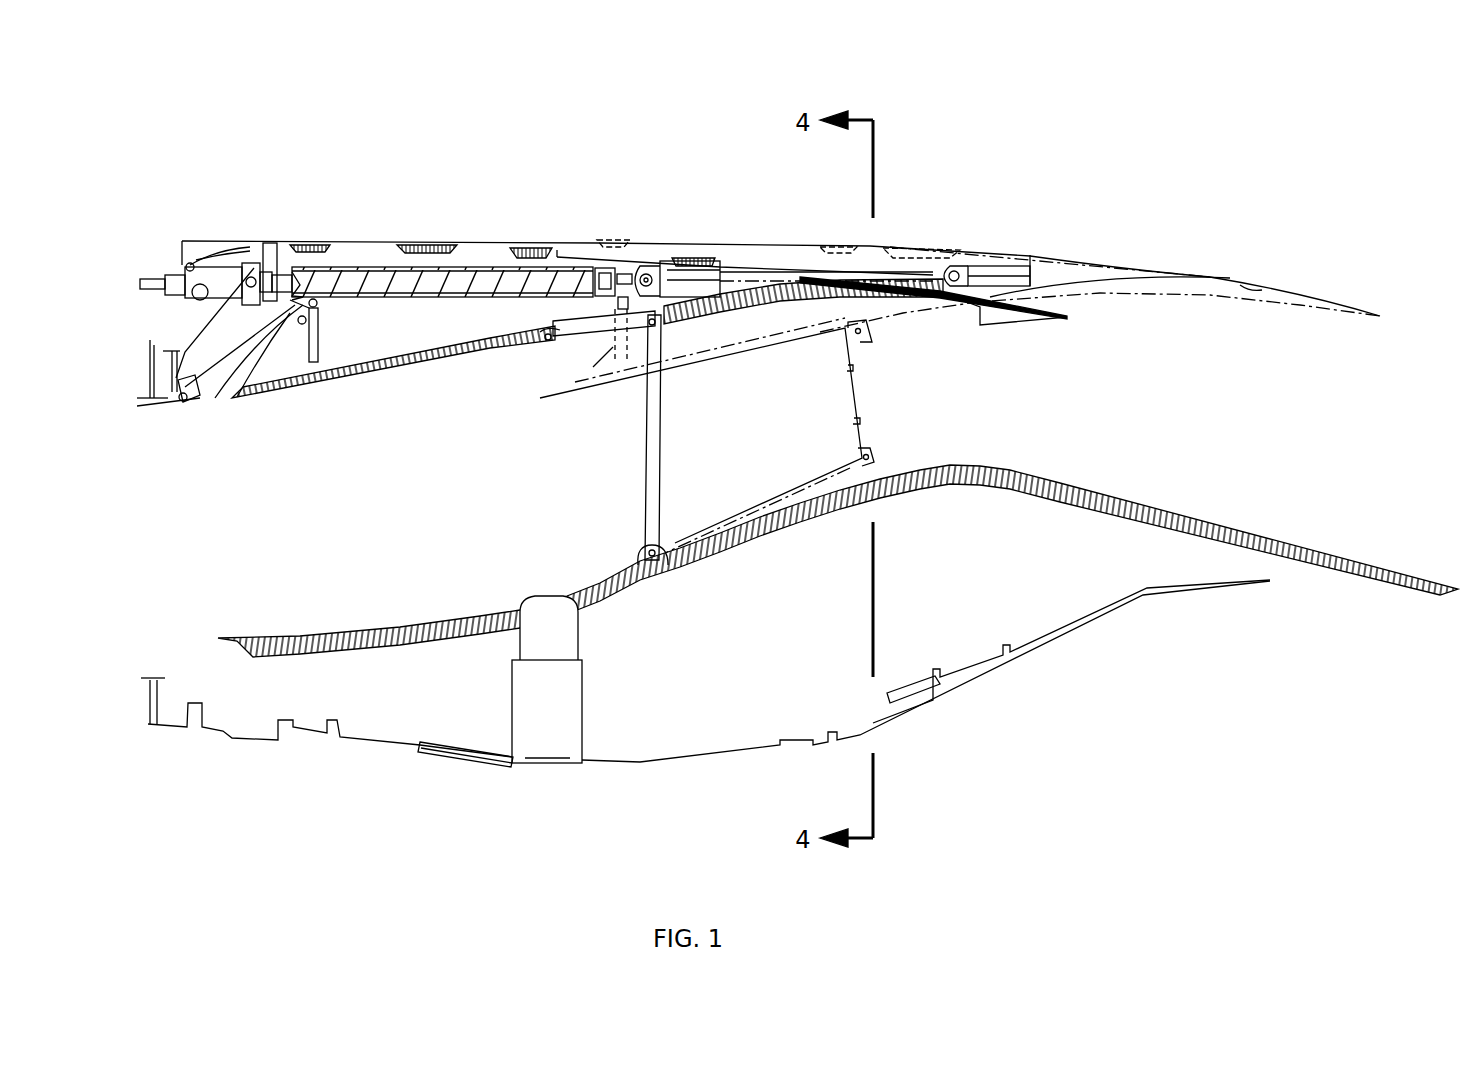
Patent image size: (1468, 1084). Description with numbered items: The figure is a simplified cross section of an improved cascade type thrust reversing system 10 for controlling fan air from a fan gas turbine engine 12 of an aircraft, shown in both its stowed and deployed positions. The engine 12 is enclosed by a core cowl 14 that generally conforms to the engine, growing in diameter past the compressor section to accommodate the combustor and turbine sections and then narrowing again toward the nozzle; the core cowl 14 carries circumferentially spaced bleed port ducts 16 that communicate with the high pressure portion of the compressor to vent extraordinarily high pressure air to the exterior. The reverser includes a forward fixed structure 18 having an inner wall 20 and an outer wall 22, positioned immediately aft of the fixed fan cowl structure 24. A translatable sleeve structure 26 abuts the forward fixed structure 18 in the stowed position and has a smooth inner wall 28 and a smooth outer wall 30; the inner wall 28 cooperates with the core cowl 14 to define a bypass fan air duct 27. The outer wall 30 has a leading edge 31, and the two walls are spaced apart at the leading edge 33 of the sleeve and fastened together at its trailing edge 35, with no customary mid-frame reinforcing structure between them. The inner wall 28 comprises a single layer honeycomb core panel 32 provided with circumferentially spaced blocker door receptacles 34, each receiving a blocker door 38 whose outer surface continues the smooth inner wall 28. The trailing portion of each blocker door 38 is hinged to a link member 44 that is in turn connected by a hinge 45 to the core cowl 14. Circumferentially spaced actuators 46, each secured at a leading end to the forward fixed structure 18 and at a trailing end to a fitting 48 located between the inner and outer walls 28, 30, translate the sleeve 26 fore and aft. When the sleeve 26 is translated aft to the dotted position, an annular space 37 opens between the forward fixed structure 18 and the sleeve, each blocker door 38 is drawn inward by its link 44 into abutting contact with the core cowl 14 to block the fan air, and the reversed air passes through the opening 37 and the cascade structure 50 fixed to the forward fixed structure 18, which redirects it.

The cascade type thrust reversing system 10 is at (933, 232).
The fan gas turbine engine 12 is at (697, 757).
The core cowl 14 is at (1033, 473).
The bleed port ducts 16 is at (563, 597).
The forward fixed structure 18 is at (202, 238).
The inner wall 20 is at (213, 393).
The outer wall 22 is at (253, 240).
The fixed fan cowl structure 24 is at (160, 407).
The translatable sleeve structure 26 is at (490, 243).
The bypass fan air duct 27 is at (498, 438).
The smooth inner wall 28 is at (390, 380).
The smooth outer wall 30 is at (382, 242).
The leading edge 31 is at (580, 238).
The single layer honeycomb core panel 32 is at (417, 352).
The leading edge 33 is at (543, 393).
The blocker door receptacles 34 is at (567, 327).
The trailing edge 35 is at (1232, 280).
The annular space 37 is at (541, 369).
The blocker door 38 is at (855, 397).
The link member 44 is at (663, 433).
The hinge 45 is at (650, 552).
The actuators 46 is at (277, 270).
The fitting 48 is at (697, 275).
The cascade structure 50 is at (340, 302).